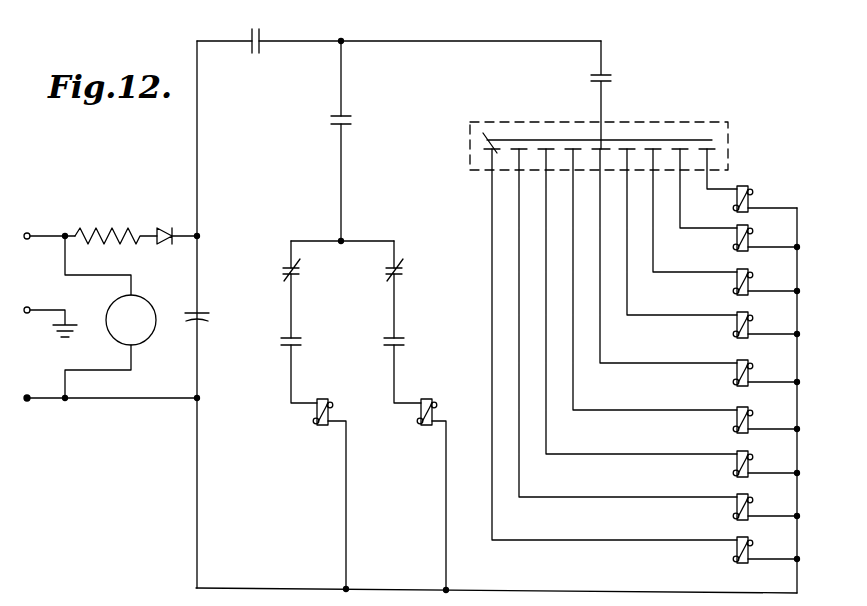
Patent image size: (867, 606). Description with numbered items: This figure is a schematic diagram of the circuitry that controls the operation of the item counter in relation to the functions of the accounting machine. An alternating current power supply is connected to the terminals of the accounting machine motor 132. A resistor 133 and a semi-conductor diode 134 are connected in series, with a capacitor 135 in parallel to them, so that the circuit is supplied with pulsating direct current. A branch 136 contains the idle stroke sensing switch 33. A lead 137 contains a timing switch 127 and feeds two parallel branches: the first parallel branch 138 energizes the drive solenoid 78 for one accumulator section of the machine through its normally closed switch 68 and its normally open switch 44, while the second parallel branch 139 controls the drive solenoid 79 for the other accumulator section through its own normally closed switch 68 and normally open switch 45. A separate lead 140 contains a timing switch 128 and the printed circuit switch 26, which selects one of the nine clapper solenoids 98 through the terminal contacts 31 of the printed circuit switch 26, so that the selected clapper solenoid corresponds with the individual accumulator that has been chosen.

The printed circuit switch 26 is at (724, 120).
The terminal contacts 31 is at (624, 147).
The idle stroke sensing switch 33 is at (266, 37).
The normally open switch 44 is at (287, 352).
The normally open switch 45 is at (400, 352).
The normally closed switch 68 is at (288, 262).
The drive solenoid 78 is at (313, 408).
The drive solenoid 79 is at (436, 418).
The clapper solenoids 98 is at (754, 241).
The timing switch 127 is at (345, 113).
The timing switch 128 is at (606, 70).
The accounting machine motor 132 is at (148, 343).
The resistor 133 is at (87, 226).
The semi-conductor diode 134 is at (160, 227).
The capacitor 135 is at (203, 328).
The branch 136 is at (196, 135).
The lead 137 is at (338, 83).
The parallel branch 138 is at (309, 241).
The parallel branch 139 is at (369, 241).
The lead 140 is at (446, 41).